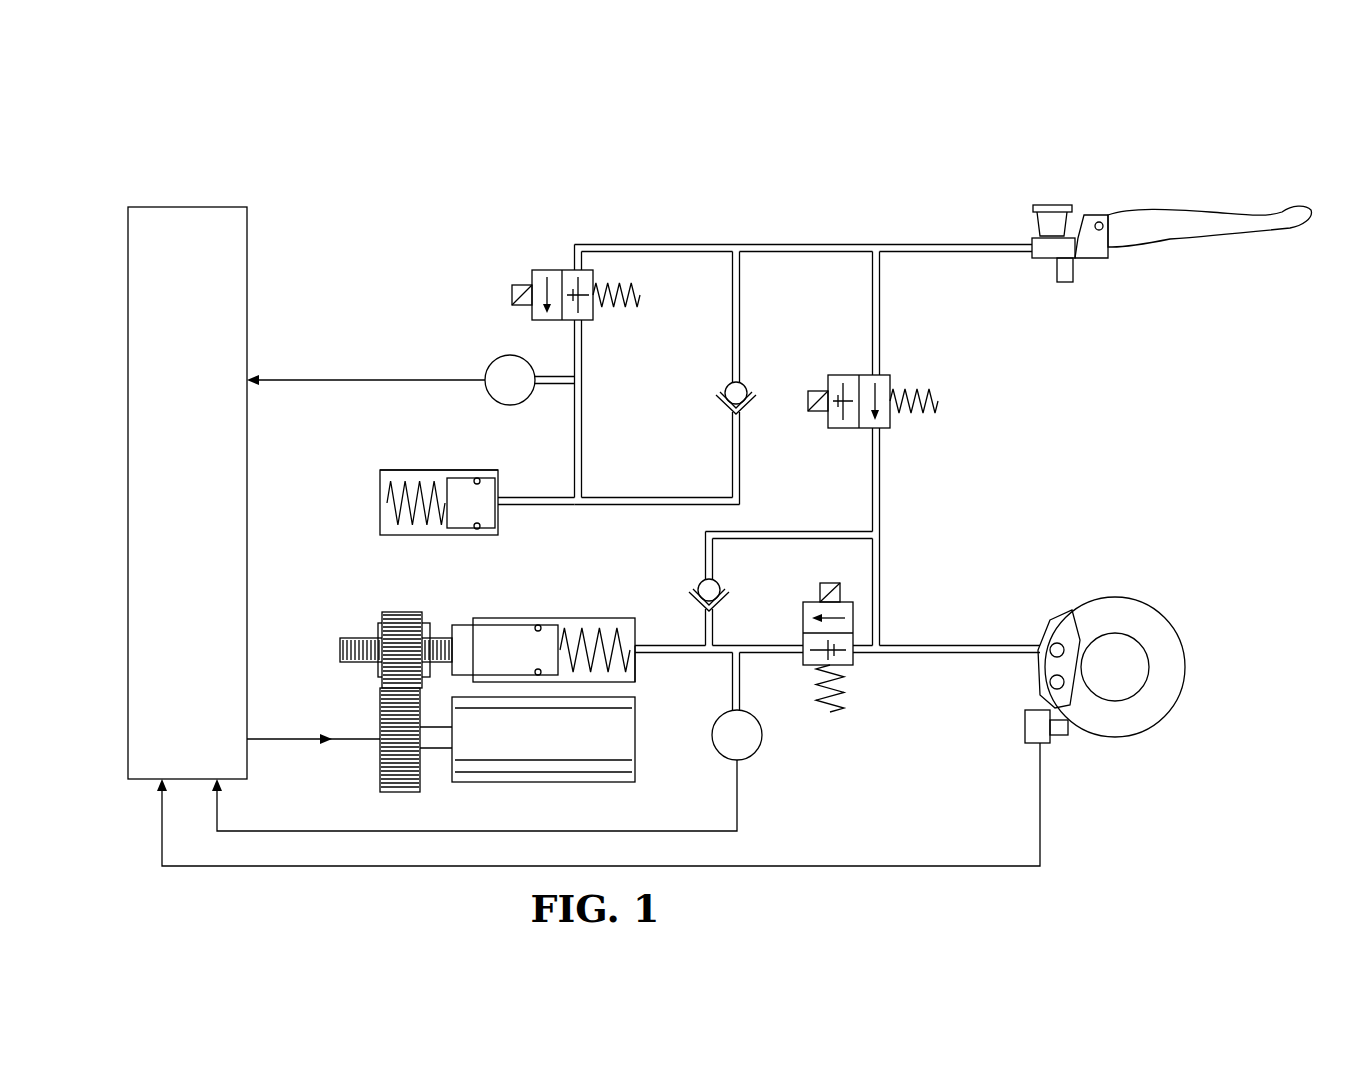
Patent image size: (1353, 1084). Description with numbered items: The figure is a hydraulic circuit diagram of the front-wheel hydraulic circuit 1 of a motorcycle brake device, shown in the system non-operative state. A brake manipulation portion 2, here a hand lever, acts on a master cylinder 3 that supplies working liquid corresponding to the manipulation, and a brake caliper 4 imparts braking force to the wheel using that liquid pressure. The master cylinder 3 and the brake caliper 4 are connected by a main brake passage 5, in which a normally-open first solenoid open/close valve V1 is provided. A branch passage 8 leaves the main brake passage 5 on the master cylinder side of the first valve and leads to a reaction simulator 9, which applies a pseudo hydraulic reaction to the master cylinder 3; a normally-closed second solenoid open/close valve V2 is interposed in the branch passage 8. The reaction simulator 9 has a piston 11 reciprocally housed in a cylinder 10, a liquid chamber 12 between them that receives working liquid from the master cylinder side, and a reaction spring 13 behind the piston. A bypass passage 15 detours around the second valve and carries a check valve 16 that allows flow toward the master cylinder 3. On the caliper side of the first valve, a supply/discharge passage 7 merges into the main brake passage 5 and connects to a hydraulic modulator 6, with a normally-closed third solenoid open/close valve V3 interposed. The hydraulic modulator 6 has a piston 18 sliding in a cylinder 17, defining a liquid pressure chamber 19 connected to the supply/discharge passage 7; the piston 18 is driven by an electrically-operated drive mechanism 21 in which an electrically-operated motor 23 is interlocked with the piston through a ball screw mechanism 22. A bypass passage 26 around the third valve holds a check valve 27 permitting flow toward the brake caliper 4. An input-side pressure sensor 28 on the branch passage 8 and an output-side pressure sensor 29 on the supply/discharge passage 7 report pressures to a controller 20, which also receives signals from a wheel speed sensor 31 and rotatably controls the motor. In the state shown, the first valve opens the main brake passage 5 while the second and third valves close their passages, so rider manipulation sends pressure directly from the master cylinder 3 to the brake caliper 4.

The hydraulic circuit 1 is at (890, 204).
The brake manipulation portion 2 is at (1196, 210).
The master cylinder 3 is at (1050, 258).
The brake caliper 4 is at (1047, 625).
The main brake passage 5 is at (881, 520).
The hydraulic modulator 6 is at (527, 612).
The supply/discharge passage 7 is at (770, 655).
The branch passage 8 is at (759, 245).
The reaction simulator 9 is at (371, 466).
The cylinder 10 is at (418, 470).
The piston 11 is at (461, 528).
The liquid chamber 12 is at (500, 500).
The reaction spring 13 is at (380, 505).
The bypass passage 15 is at (741, 458).
The check valve 16 is at (726, 386).
The cylinder 17 is at (595, 620).
The piston 18 is at (550, 628).
The liquid pressure chamber 19 is at (630, 683).
The controller 20 is at (186, 207).
The electrically-operated drive mechanism 21 is at (435, 768).
The ball screw mechanism 22 is at (410, 612).
The electrically-operated motor 23 is at (595, 770).
The bypass passage 26 is at (815, 531).
The check valve 27 is at (700, 585).
The input-side pressure sensor 28 is at (495, 365).
The output-side pressure sensor 29 is at (756, 760).
The wheel speed sensor 31 is at (1052, 743).
The first solenoid open/close valve V1 is at (893, 392).
The second solenoid open/close valve V2 is at (540, 270).
The third solenoid open/close valve V3 is at (850, 665).